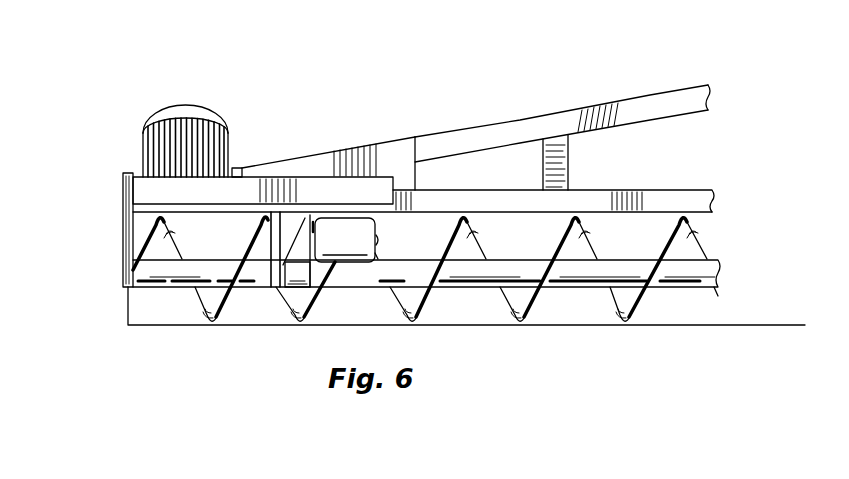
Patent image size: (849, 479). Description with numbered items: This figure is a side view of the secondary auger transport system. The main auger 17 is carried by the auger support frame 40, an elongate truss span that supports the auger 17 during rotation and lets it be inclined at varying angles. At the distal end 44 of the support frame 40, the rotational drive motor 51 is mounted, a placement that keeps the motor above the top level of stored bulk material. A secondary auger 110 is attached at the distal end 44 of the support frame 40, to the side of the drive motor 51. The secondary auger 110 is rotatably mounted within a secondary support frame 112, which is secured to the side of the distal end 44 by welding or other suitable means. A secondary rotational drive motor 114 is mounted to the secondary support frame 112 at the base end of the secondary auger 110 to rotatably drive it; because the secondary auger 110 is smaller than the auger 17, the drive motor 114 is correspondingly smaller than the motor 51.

The auger 17 is at (597, 222).
The auger support frame 40 is at (668, 96).
The distal end 44 is at (385, 142).
The rotational drive motor 51 is at (215, 114).
The secondary auger 110 is at (211, 303).
The secondary support frame 112 is at (123, 202).
The secondary rotational drive motor 114 is at (352, 245).